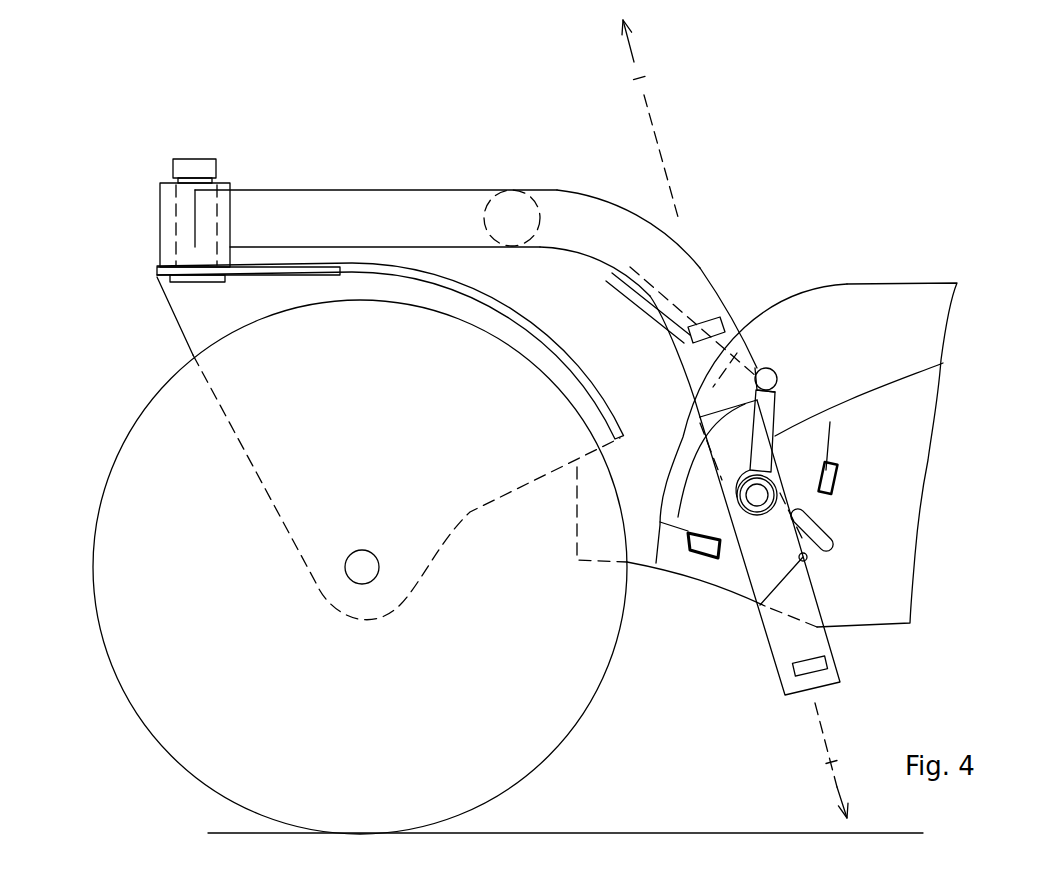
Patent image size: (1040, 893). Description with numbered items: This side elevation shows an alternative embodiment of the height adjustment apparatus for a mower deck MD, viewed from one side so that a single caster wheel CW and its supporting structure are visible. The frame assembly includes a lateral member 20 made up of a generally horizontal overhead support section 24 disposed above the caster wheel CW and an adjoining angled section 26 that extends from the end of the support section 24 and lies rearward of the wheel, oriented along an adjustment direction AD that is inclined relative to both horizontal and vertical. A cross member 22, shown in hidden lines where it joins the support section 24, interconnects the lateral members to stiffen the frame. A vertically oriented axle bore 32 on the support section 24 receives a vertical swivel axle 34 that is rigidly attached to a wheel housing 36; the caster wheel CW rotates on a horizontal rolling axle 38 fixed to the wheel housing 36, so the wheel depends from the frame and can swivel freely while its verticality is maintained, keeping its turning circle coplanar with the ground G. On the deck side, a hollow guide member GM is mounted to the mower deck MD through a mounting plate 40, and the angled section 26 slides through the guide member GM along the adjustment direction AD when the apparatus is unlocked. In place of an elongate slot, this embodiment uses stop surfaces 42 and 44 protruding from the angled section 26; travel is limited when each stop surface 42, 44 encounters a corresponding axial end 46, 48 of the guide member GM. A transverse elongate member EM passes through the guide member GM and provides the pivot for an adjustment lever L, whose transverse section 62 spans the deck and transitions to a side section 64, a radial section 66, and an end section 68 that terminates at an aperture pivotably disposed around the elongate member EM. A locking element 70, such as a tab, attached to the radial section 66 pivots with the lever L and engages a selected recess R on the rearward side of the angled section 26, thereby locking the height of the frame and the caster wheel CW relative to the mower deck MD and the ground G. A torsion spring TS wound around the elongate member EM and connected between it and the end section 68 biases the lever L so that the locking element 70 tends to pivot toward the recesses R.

The lateral member 20 is at (560, 190).
The cross member 22 is at (495, 190).
The overhead support section 24 is at (280, 190).
The angled section 26 is at (707, 273).
The axle bore 32 is at (160, 204).
The swivel axle 34 is at (197, 158).
The wheel housing 36 is at (177, 323).
The rolling axle 38 is at (345, 570).
The mounting plate 40 is at (943, 363).
The stop surface 42 is at (725, 320).
The stop surface 44 is at (827, 667).
The axial end of guide member 46 is at (700, 390).
The axial end of guide member 48 is at (806, 558).
The transverse section 62 is at (610, 278).
The side section 64 is at (637, 302).
The radial section 66 is at (768, 367).
The end section 68 is at (773, 402).
The locking element 70 is at (783, 370).
The adjustment direction AD is at (641, 78).
The adjustment lever L is at (678, 283).
The mower deck MD is at (907, 277).
The recess R is at (783, 461).
The guide member GM is at (660, 528).
The torsion spring TS is at (758, 520).
The transverse elongate member EM is at (733, 518).
The caster wheel CW is at (160, 742).
The ground G is at (633, 833).